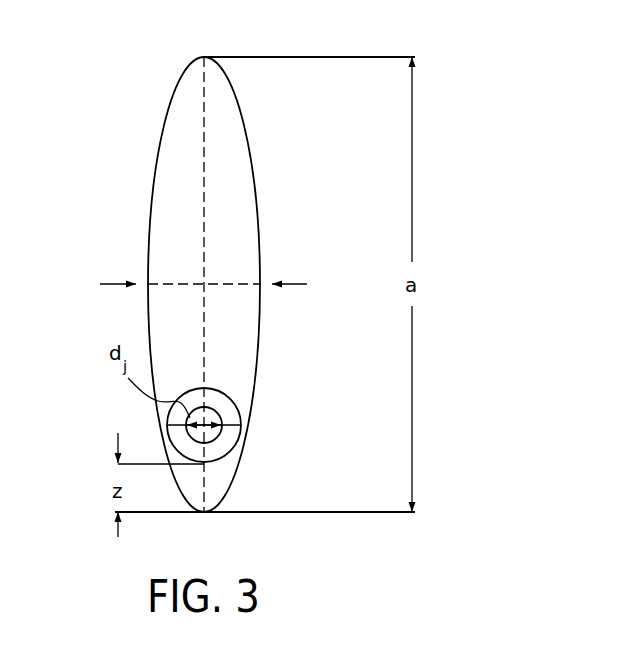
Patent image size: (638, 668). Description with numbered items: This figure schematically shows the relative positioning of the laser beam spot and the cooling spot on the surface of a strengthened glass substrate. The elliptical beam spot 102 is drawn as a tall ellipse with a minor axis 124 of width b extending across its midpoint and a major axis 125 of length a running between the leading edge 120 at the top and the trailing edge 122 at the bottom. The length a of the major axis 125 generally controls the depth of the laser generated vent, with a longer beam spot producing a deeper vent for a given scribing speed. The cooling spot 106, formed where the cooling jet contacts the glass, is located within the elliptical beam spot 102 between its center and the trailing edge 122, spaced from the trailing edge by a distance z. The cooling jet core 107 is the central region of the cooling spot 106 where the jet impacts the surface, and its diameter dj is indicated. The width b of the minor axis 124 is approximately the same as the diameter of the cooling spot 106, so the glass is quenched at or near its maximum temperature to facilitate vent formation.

The elliptical beam spot 102 is at (138, 152).
The cooling spot 106 is at (236, 400).
The cooling jet core 107 is at (217, 439).
The leading edge 120 is at (308, 57).
The trailing edge 122 is at (308, 512).
The minor axis 124 is at (187, 283).
The major axis 125 is at (205, 150).